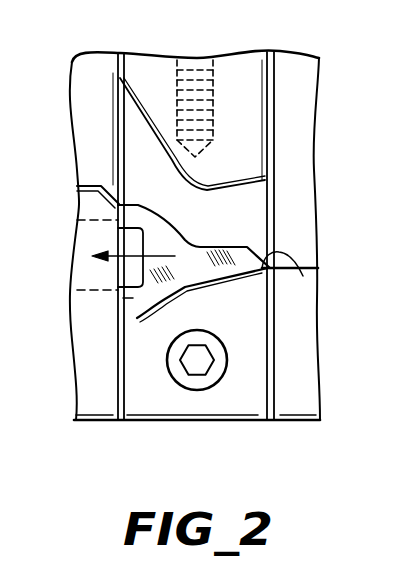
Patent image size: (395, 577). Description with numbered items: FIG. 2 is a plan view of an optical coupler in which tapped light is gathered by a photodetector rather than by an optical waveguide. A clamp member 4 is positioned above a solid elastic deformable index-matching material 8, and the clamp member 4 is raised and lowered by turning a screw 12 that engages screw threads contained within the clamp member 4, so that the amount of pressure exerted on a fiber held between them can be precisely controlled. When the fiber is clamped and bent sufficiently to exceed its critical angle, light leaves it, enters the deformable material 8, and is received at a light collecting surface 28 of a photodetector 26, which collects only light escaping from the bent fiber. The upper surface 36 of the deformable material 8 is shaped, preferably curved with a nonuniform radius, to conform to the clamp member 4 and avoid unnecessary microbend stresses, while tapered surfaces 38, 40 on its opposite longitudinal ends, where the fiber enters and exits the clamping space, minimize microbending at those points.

The clamp member 4 is at (237, 80).
The screw 12 is at (183, 60).
The tapered surface 40 is at (112, 186).
The solid elastic deformable index-matching material 8 is at (133, 300).
The light collecting surface 28 is at (145, 250).
The photodetector 26 is at (123, 291).
The upper surface 36 is at (222, 245).
The tapered surface 38 is at (303, 276).